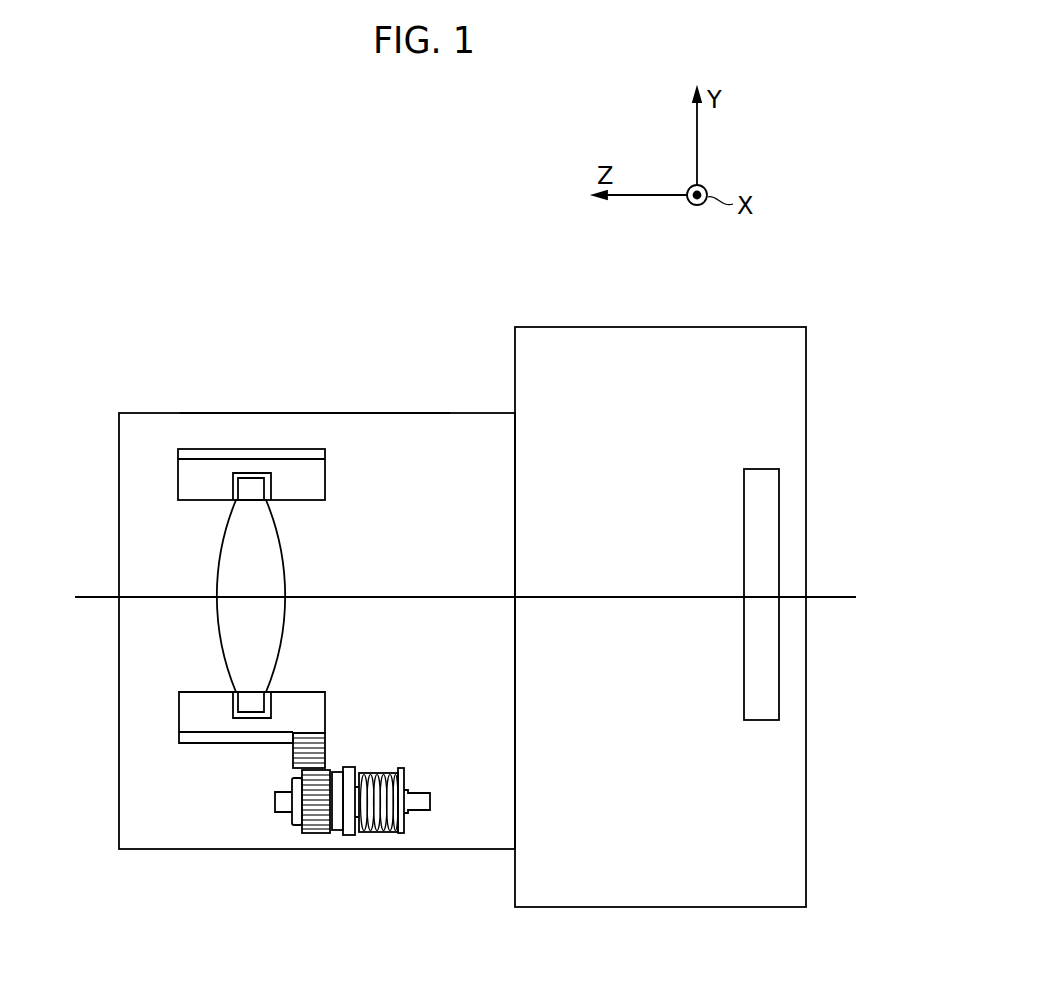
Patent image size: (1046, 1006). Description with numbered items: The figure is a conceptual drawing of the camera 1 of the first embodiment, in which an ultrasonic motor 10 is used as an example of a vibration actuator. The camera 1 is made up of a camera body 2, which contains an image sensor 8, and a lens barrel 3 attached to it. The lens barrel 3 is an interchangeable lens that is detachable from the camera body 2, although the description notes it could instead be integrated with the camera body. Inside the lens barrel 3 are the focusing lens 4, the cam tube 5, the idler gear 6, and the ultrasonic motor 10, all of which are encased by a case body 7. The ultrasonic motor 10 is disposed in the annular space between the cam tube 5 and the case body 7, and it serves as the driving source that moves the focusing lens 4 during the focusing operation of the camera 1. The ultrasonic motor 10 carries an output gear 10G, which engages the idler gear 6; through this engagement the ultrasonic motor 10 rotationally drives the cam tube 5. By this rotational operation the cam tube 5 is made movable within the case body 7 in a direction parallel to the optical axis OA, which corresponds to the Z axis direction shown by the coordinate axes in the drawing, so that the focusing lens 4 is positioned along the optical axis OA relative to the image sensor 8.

The camera 1 is at (406, 255).
The camera body 2 is at (572, 318).
The lens barrel 3 is at (368, 400).
The focusing lens 4 is at (217, 640).
The cam tube 5 is at (205, 745).
The idler gear 6 is at (293, 758).
The case body 7 is at (307, 413).
The image sensor 8 is at (779, 690).
The ultrasonic motor 10 is at (375, 863).
The output gear 10G is at (315, 833).
The optical axis OA is at (88, 597).